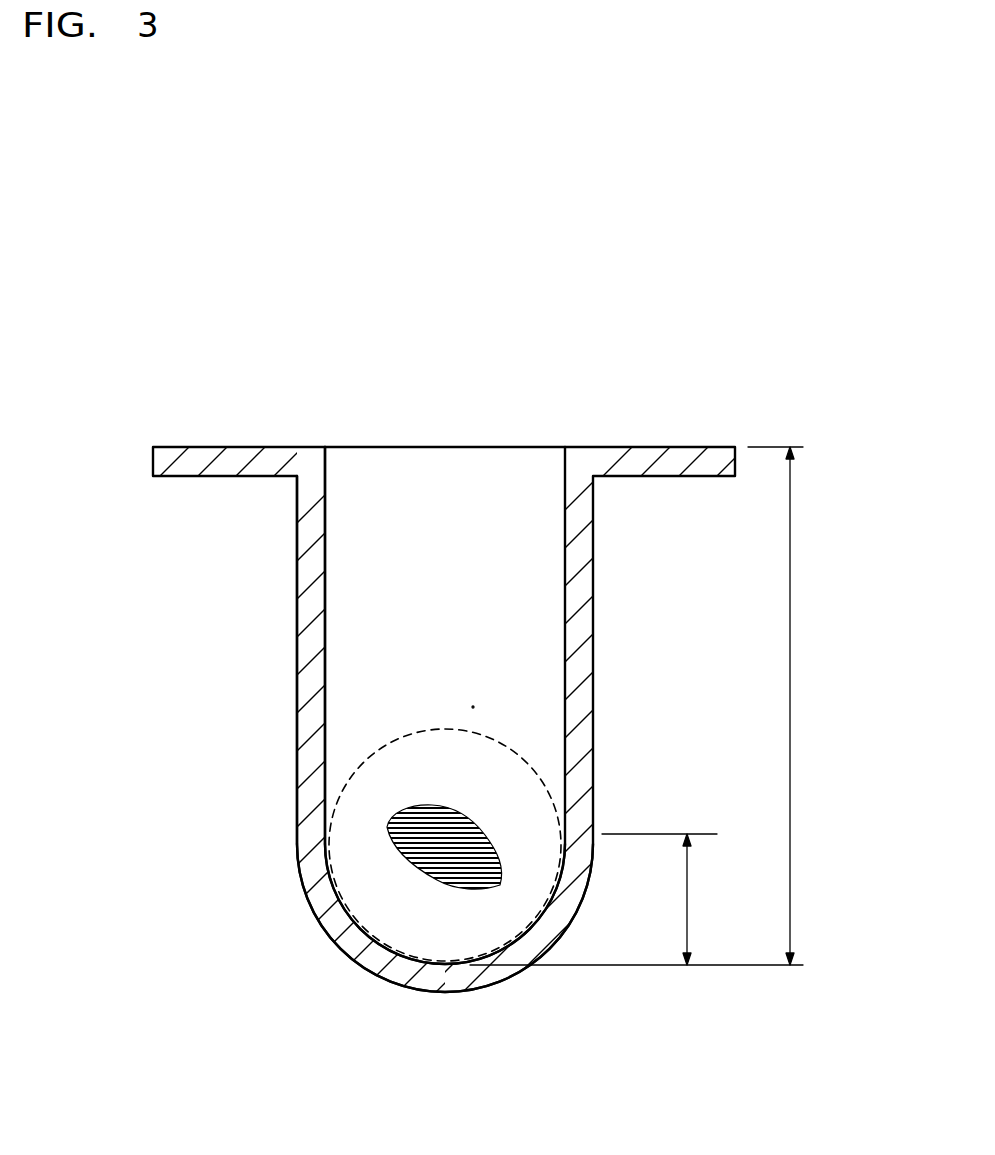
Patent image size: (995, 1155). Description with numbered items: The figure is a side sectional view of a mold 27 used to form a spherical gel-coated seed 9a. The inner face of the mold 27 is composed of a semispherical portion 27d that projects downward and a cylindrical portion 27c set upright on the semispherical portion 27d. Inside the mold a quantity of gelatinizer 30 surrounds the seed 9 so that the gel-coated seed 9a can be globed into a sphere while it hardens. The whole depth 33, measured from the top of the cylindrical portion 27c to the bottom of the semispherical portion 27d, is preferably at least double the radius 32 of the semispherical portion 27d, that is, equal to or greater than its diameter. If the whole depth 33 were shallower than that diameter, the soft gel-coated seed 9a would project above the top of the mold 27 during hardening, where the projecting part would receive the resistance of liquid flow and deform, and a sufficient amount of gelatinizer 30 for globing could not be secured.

The mold 27 is at (846, 455).
The cylindrical portion 27c is at (318, 594).
The semispherical portion 27d is at (322, 887).
The gelatinizer 30 is at (418, 730).
The sensor element 9 is at (480, 830).
The gel-coated seed 9a is at (473, 707).
The radius of the semispherical portion 32 is at (690, 904).
The whole depth 33 is at (793, 683).